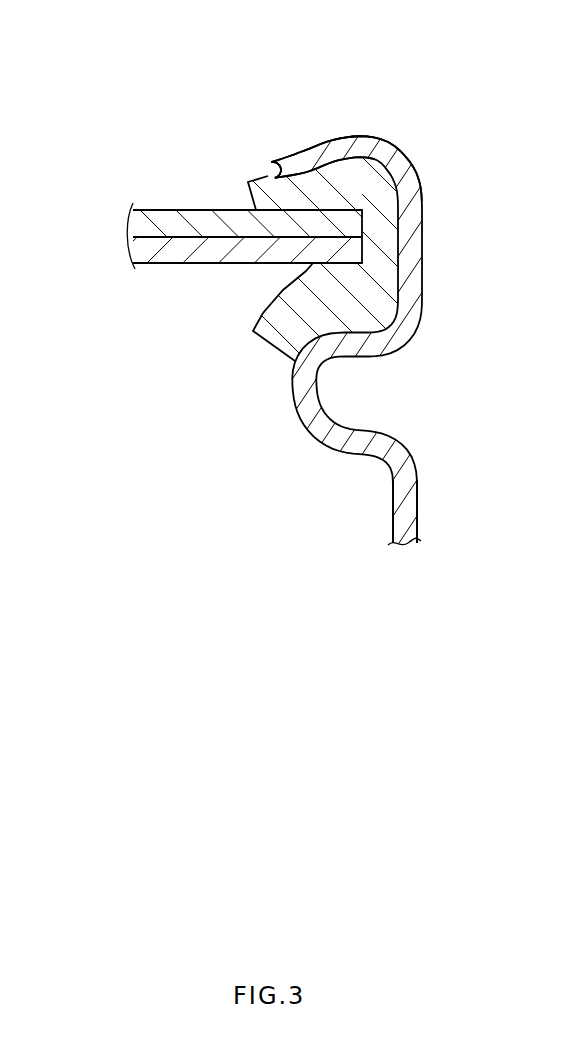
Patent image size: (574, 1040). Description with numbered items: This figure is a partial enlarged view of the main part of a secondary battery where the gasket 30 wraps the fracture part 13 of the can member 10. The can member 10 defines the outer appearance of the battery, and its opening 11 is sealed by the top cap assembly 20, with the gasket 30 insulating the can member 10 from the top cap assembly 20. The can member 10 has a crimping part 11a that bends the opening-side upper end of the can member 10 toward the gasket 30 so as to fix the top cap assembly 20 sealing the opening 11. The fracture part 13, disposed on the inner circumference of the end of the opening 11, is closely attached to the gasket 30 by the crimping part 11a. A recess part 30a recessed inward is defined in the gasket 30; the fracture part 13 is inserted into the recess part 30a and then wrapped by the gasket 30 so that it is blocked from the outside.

The can member 10 is at (410, 494).
The opening 11 is at (394, 103).
The crimping part 11a is at (323, 141).
The fracture part 13 is at (296, 168).
The top cap assembly 20 is at (140, 222).
The gasket 30 is at (250, 187).
The recess part 30a is at (267, 163).